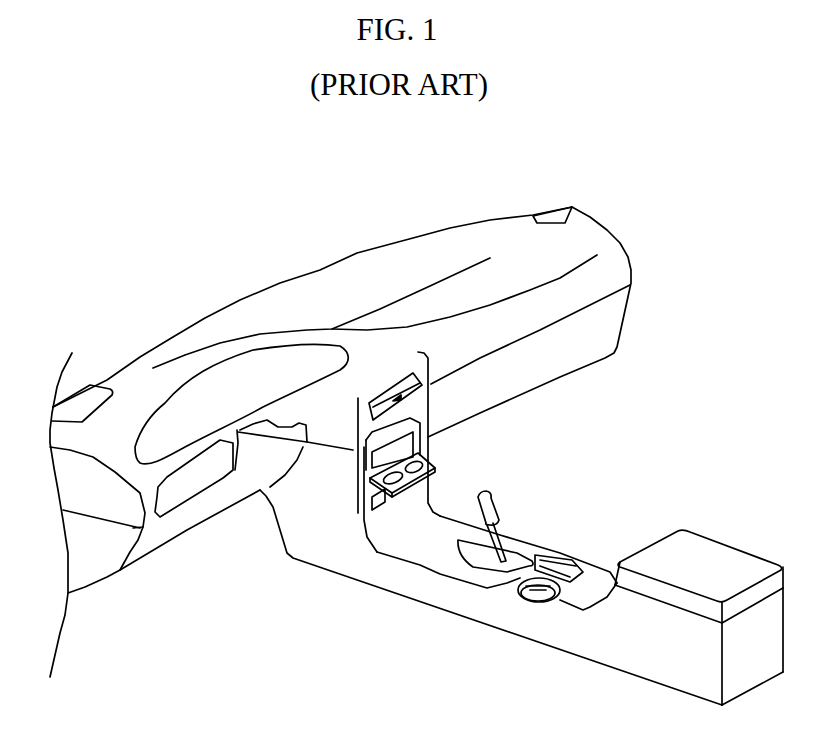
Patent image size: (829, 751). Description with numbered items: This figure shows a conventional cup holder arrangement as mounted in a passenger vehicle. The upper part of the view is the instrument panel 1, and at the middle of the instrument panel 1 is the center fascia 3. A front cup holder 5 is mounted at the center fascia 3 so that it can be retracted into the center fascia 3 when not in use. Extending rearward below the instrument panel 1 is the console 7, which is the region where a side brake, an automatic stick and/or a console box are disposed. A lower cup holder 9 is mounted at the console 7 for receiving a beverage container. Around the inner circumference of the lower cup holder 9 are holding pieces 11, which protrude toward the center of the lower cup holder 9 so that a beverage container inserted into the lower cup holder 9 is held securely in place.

The instrument panel 1 is at (458, 338).
The center fascia 3 is at (417, 408).
The front cup holder 5 is at (437, 468).
The console 7 is at (413, 582).
The lower cup holder 9 is at (560, 600).
The holding pieces 11 is at (523, 582).